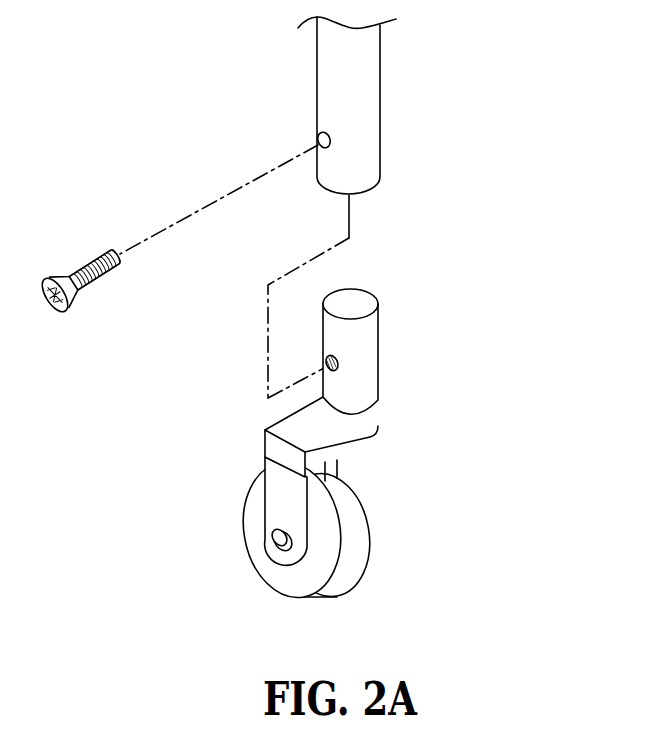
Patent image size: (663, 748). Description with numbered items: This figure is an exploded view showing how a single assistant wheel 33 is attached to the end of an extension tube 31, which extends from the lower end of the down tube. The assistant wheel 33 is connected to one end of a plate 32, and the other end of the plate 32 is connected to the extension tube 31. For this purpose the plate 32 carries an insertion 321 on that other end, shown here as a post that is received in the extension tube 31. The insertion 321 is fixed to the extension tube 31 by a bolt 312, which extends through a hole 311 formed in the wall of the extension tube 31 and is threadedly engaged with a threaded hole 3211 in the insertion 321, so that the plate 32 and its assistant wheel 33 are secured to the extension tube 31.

The extension tube 31 is at (368, 105).
The hole 311 is at (317, 138).
The bolt 312 is at (96, 289).
The plate 32 is at (345, 440).
The insertion 321 is at (363, 335).
The threaded hole 3211 is at (338, 366).
The assistant wheel 33 is at (347, 555).